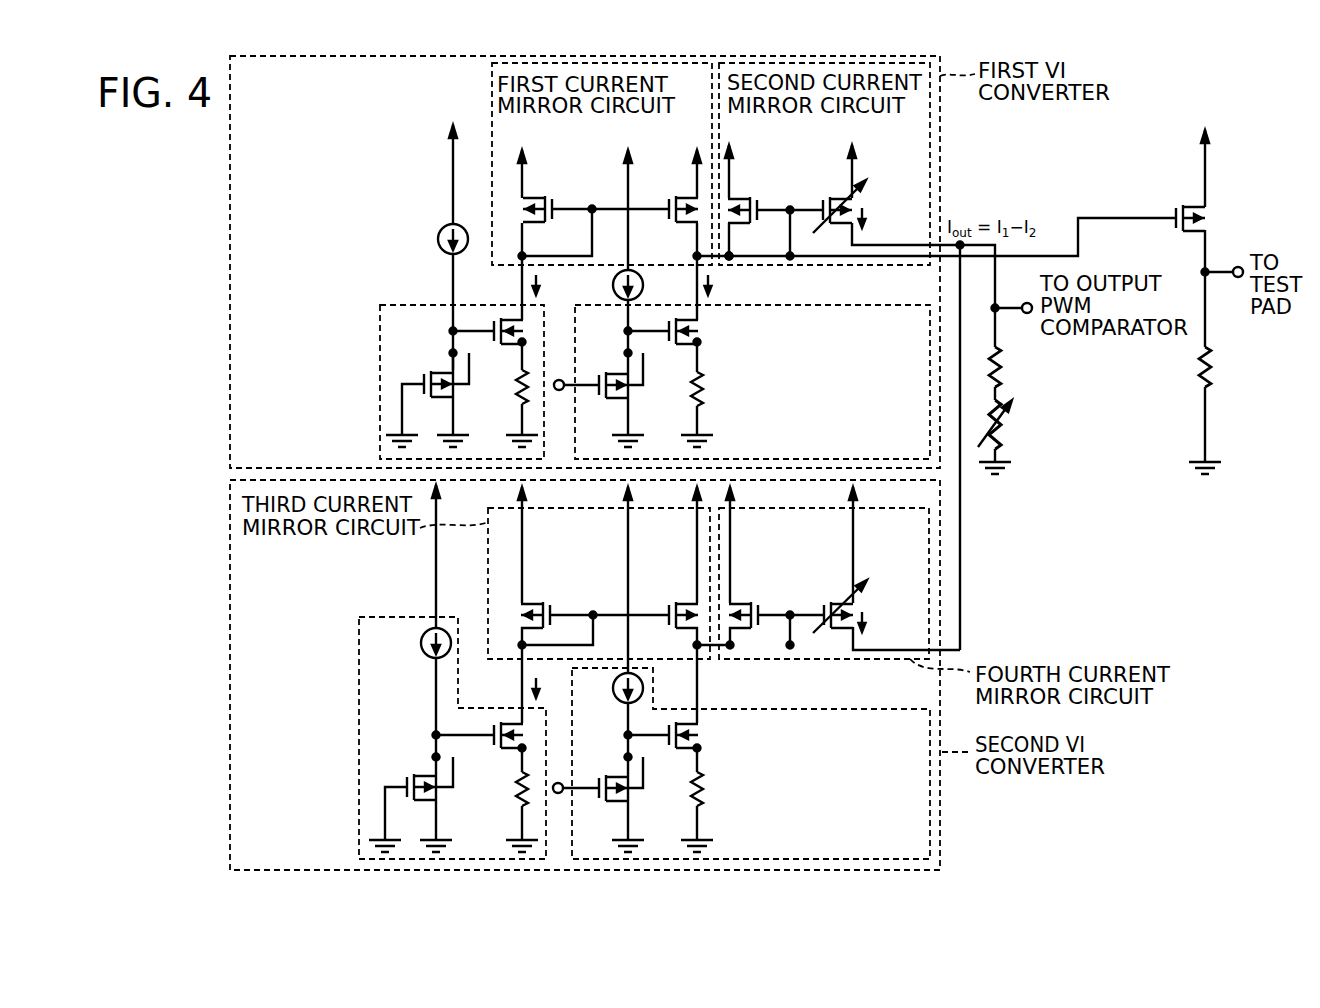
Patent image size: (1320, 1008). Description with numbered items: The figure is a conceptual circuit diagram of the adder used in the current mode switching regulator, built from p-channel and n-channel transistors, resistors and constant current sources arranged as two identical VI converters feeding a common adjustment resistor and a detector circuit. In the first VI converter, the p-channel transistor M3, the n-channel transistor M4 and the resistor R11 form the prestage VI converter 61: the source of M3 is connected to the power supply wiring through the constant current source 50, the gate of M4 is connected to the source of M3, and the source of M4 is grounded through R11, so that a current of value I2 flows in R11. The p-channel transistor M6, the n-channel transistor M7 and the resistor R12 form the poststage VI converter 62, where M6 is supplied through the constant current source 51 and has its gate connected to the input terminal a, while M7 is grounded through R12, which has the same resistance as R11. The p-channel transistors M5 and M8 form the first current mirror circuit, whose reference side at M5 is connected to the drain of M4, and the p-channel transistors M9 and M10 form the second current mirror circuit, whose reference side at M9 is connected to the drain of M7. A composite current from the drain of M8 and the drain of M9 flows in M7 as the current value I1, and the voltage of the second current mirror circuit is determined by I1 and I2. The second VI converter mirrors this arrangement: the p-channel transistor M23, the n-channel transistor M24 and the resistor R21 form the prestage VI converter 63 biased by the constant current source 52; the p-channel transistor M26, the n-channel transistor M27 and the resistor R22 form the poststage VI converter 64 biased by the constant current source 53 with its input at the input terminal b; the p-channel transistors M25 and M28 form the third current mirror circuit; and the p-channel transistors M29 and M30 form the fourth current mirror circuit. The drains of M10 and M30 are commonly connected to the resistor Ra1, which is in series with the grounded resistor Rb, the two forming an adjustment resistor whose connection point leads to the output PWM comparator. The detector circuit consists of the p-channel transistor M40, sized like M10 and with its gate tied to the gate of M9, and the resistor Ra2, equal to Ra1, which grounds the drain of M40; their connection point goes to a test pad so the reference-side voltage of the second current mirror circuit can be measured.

The constant current source 50 is at (443, 228).
The constant current source 51 is at (643, 286).
The constant current source 52 is at (419, 643).
The constant current source 53 is at (643, 690).
The prestage VI converter 61 is at (380, 318).
The poststage VI converter 62 is at (850, 306).
The prestage VI converter 63 is at (385, 617).
The poststage VI converter 64 is at (806, 709).
The p-channel transistor M3 is at (428, 370).
The n-channel transistor M4 is at (497, 318).
The p-channel transistor M5 is at (531, 197).
The p-channel transistor M6 is at (608, 371).
The n-channel transistor M7 is at (683, 346).
The p-channel transistor M8 is at (680, 197).
The p-channel transistor M9 is at (736, 197).
The p-channel transistor M10 is at (826, 197).
The p-channel transistor M23 is at (411, 773).
The n-channel transistor M24 is at (500, 722).
The p-channel transistor M25 is at (531, 603).
The p-channel transistor M26 is at (606, 774).
The n-channel transistor M27 is at (683, 750).
The p-channel transistor M28 is at (680, 603).
The p-channel transistor M29 is at (736, 603).
The p-channel transistor M30 is at (830, 603).
The p-channel transistor M40 is at (1188, 206).
The resistor R11 is at (516, 392).
The resistor R12 is at (710, 386).
The resistor R21 is at (515, 790).
The resistor R22 is at (708, 782).
The resistor Ra1 is at (1001, 372).
The resistor Ra2 is at (1211, 372).
The resistor Rb is at (1001, 430).
The input terminal a is at (559, 391).
The input terminal b is at (558, 794).
The current value I1 is at (718, 287).
The current value I2 is at (548, 287).